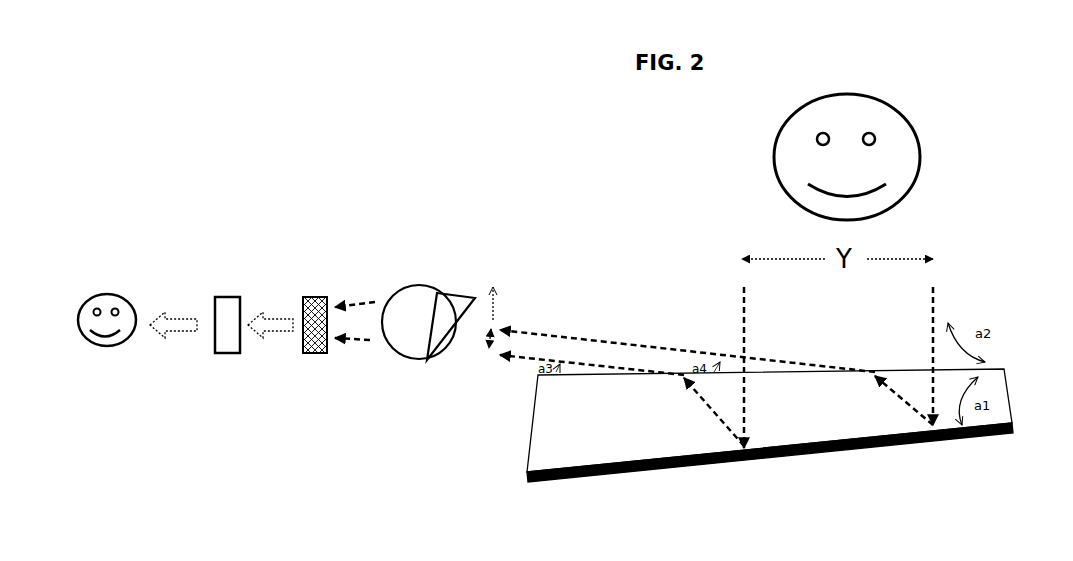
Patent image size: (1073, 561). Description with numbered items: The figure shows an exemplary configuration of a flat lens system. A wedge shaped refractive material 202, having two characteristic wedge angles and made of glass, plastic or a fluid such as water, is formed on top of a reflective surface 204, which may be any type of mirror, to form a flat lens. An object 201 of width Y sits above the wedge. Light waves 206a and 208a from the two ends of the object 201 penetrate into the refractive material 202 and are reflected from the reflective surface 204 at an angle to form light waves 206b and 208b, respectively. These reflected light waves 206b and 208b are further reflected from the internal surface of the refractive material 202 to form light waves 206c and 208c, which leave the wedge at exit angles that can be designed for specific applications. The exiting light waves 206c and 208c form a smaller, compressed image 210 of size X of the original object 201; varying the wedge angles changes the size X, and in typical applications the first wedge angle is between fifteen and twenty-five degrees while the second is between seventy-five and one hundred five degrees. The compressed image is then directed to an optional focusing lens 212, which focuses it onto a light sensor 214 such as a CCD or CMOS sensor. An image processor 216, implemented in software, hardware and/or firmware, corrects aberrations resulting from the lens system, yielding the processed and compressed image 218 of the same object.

The object 201 is at (847, 147).
The wedge shaped refractive material 202 is at (713, 420).
The reflective surface 204 is at (523, 473).
The light wave 206a is at (909, 356).
The light wave 206b is at (876, 400).
The light wave 206c is at (687, 338).
The light wave 208a is at (712, 367).
The light wave 208b is at (691, 412).
The light wave 208c is at (578, 370).
The compressed image 210 is at (506, 295).
The focusing lens 212 is at (428, 306).
The light sensor 214 is at (303, 300).
The image processor 216 is at (216, 301).
The compressed image 218 is at (101, 298).